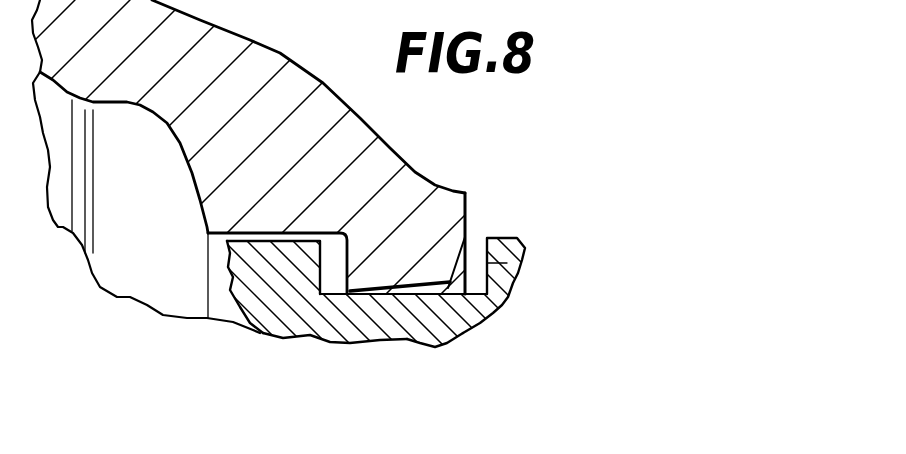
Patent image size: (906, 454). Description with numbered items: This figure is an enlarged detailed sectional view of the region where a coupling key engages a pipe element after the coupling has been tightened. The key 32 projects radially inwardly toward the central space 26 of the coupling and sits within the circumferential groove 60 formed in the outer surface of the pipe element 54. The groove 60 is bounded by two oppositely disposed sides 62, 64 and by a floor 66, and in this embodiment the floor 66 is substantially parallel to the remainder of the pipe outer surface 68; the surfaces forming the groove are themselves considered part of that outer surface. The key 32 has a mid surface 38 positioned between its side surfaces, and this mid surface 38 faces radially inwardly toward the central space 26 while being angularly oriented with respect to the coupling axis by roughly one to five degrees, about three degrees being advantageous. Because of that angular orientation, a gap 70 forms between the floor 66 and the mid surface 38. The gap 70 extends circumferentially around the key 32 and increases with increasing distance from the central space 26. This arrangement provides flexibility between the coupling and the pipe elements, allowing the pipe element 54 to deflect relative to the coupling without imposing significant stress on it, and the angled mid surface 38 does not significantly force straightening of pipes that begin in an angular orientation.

The central space 26 is at (95, 349).
The key 32 is at (390, 260).
The mid surface 38 is at (418, 280).
The pipe element 54 is at (262, 318).
The circumferential groove 60 is at (478, 333).
The side 62 is at (323, 252).
The side 64 is at (507, 263).
The floor 66 is at (405, 340).
The pipe outer surface 68 is at (498, 238).
The gap 70 is at (445, 337).